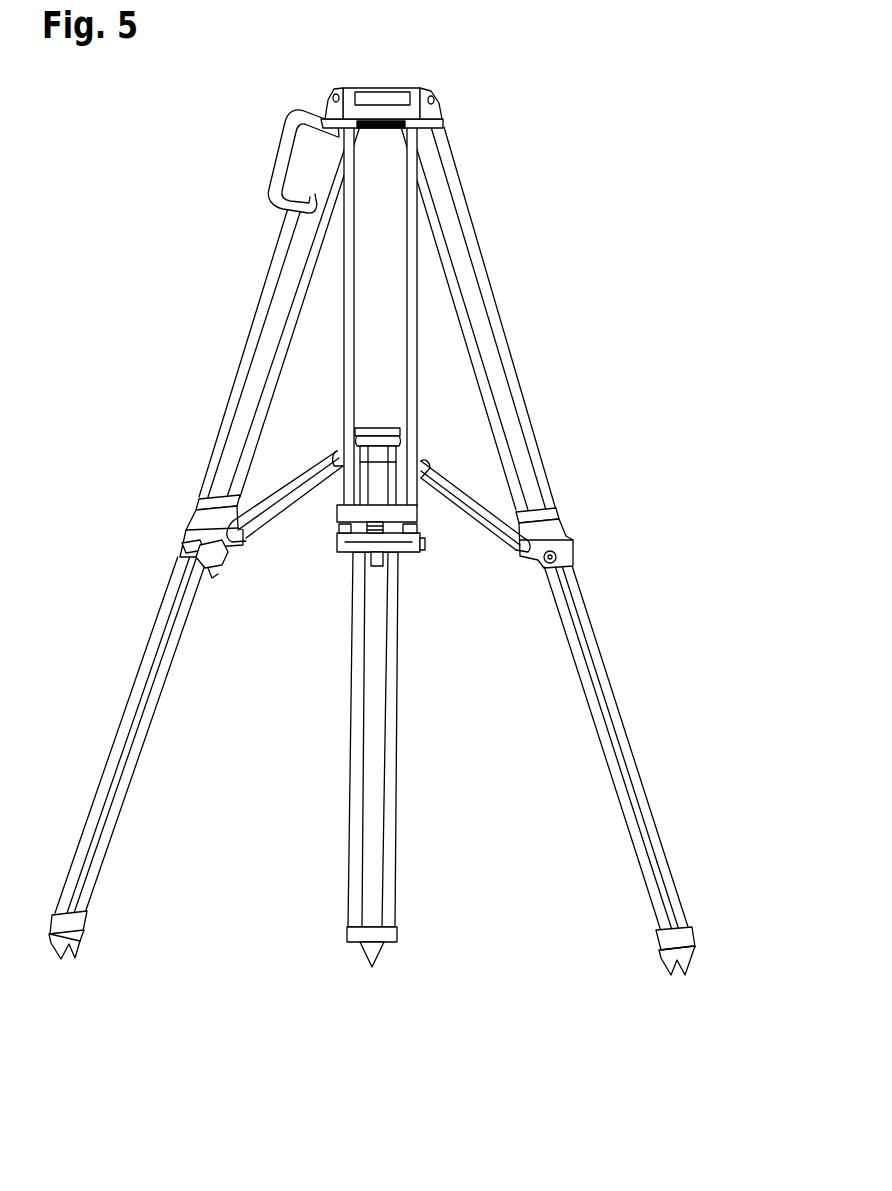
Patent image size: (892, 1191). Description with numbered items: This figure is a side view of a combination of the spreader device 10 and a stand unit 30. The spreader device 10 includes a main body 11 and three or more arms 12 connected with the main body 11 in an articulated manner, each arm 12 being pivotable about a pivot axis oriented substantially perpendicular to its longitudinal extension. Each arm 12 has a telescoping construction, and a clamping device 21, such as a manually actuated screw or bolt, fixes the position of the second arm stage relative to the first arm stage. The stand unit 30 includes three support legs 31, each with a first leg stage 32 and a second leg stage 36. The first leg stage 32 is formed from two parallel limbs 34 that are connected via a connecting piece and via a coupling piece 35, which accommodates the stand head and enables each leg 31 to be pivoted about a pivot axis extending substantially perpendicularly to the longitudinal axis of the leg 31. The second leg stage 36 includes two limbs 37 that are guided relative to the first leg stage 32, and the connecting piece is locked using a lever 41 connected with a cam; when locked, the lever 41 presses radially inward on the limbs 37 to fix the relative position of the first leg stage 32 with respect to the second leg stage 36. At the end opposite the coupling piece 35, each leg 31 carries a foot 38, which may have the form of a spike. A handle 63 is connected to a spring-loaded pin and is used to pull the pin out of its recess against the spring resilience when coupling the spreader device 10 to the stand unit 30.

The spreader device 10 is at (472, 541).
The main body 11 is at (389, 427).
The arm 12 is at (310, 457).
The clamping device 21 is at (220, 562).
The stand unit 30 is at (625, 383).
The support leg 31 is at (245, 332).
The first leg stage 32 is at (492, 266).
The limb 34 is at (503, 345).
The coupling piece 35 is at (448, 98).
The second leg stage 36 is at (639, 748).
The limb 37 is at (396, 777).
The foot 38 is at (355, 959).
The lever 41 is at (345, 552).
The handle 63 is at (183, 548).